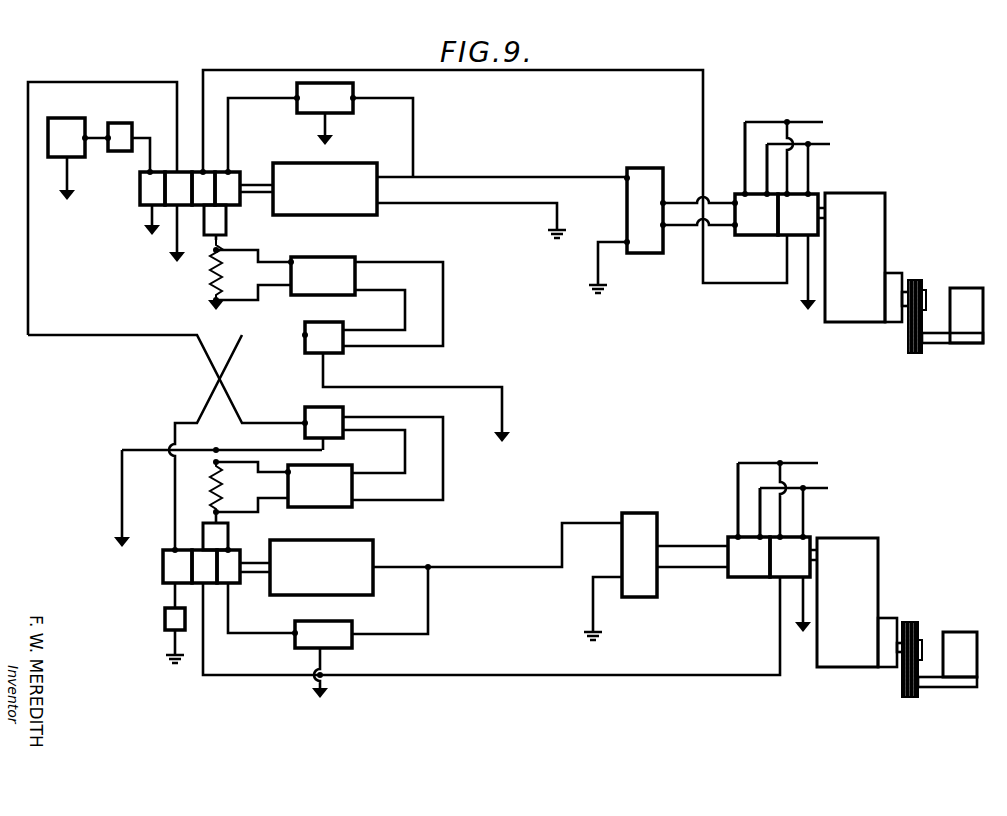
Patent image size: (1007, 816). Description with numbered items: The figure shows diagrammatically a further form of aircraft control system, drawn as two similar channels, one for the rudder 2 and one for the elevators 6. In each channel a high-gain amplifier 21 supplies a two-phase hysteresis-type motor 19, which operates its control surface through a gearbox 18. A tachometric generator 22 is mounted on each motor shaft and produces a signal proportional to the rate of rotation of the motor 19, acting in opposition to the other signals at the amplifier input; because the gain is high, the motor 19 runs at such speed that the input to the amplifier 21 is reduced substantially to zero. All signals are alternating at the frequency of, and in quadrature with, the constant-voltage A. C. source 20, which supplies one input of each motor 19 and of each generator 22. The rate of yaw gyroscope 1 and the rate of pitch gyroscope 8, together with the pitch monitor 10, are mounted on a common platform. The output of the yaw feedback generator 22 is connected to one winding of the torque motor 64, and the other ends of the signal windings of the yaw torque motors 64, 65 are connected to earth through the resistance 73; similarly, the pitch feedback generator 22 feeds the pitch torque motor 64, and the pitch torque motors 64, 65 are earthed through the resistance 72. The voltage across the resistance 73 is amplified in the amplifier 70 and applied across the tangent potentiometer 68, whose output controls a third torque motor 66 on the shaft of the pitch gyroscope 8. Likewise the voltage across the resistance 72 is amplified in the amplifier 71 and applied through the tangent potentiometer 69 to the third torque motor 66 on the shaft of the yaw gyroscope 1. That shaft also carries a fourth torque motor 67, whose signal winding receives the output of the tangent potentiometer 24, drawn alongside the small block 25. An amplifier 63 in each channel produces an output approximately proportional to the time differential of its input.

The rate of yaw gyroscope 1 is at (340, 208).
The rudder 2 is at (958, 298).
The elevators 6 is at (965, 640).
The rate of pitch gyroscope 8 is at (357, 575).
The pitch monitor 10 is at (168, 626).
The gearbox 18 is at (870, 240).
The motor 19 is at (752, 222).
The A. C. source 20 is at (799, 329).
The amplifier 21 is at (645, 176).
The generator 22 is at (803, 198).
The tangent potentiometer 24 is at (58, 121).
The pick-off 25 is at (115, 122).
The amplifier 63 is at (312, 97).
The torque motor 64 is at (207, 180).
The torque motor 65 is at (228, 183).
The third torque motor 66 is at (178, 193).
The fourth torque motor 67 is at (146, 186).
The tangent potentiometer 68 is at (341, 351).
The tangent potentiometer 69 is at (318, 419).
The amplifier 70 is at (333, 266).
The amplifier 71 is at (315, 497).
The resistance 72 is at (222, 482).
The resistance 73 is at (210, 272).